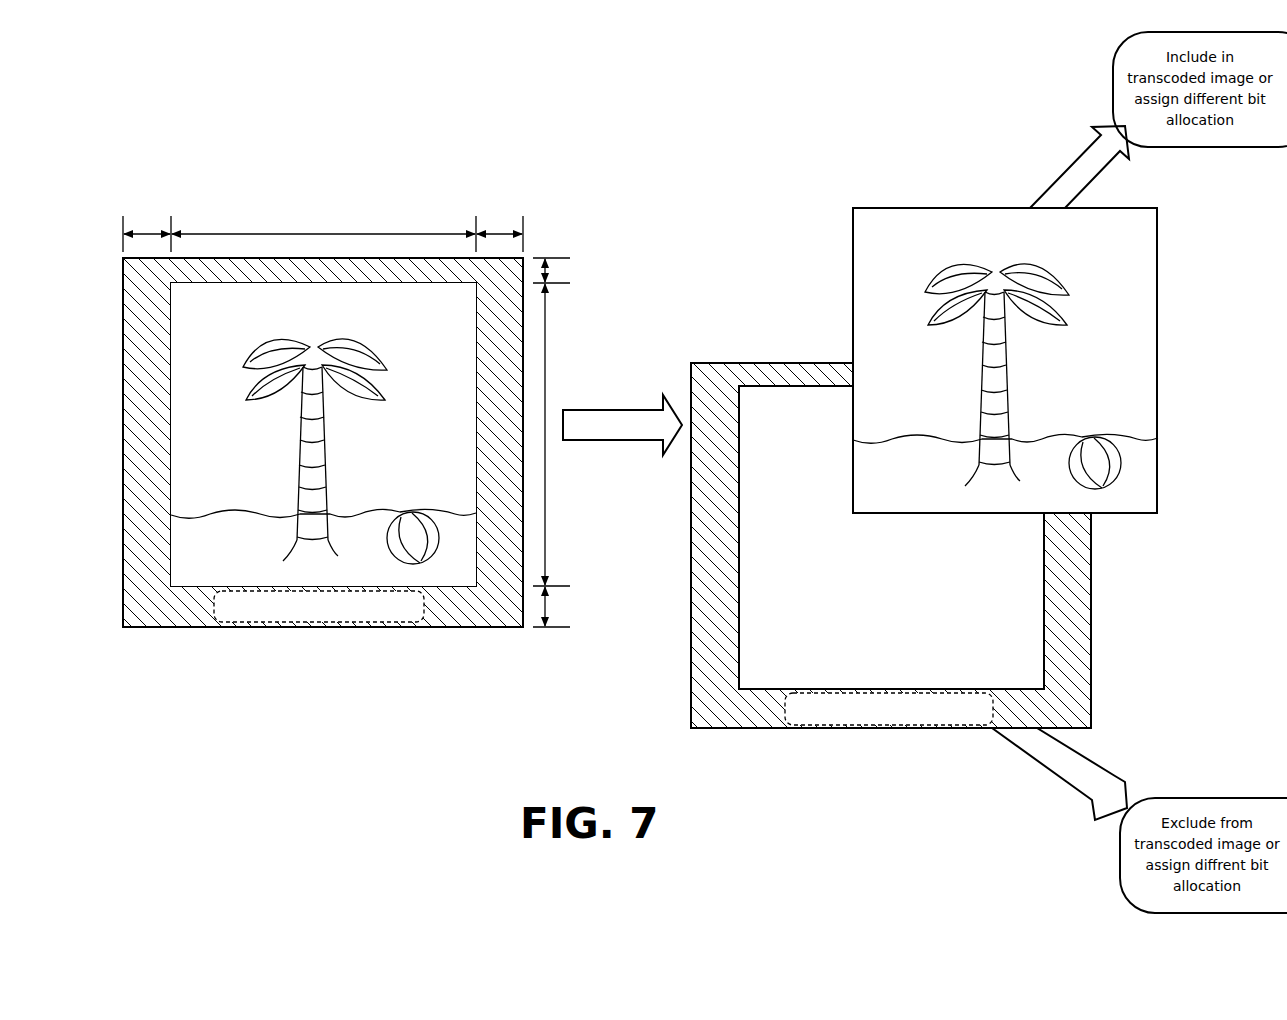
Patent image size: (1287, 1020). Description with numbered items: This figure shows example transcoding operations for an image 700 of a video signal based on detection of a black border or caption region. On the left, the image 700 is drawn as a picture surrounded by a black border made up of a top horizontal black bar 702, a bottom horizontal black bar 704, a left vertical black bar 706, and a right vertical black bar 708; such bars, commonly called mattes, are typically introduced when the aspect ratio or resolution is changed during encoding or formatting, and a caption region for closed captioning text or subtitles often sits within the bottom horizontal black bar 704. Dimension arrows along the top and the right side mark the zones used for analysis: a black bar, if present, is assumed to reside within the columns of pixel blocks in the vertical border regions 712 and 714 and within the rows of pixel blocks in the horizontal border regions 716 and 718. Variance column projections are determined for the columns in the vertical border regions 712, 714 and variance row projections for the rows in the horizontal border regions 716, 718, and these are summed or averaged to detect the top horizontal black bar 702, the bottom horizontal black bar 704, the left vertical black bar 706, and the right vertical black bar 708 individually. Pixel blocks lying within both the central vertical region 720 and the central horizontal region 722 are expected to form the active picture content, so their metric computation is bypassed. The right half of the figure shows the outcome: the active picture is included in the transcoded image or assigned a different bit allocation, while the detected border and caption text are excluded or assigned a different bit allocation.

The image 700 is at (356, 188).
The top horizontal black bar 702 is at (330, 268).
The bottom horizontal black bar 704 is at (466, 603).
The left vertical black bar 706 is at (153, 437).
The right vertical black bar 708 is at (507, 437).
The vertical border region 712 is at (143, 232).
The vertical border region 714 is at (498, 232).
The horizontal border region 716 is at (565, 268).
The horizontal border region 718 is at (555, 604).
The vertical region 720 is at (237, 233).
The horizontal region 722 is at (548, 312).